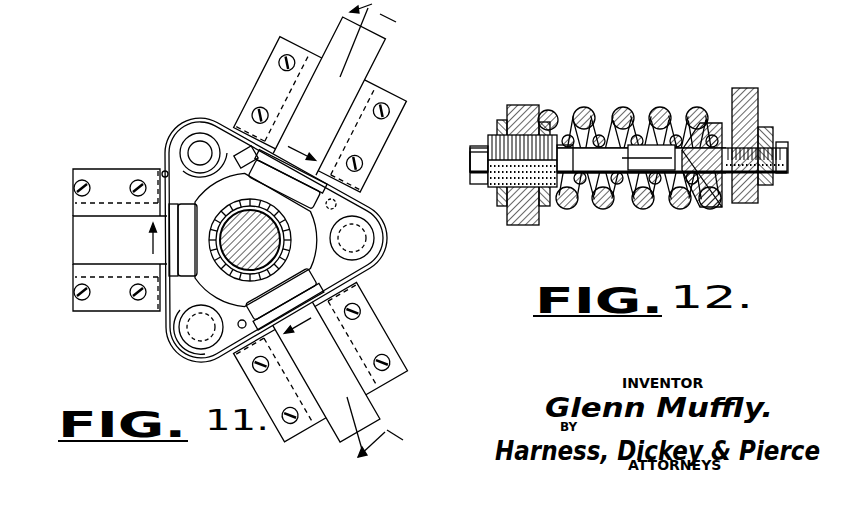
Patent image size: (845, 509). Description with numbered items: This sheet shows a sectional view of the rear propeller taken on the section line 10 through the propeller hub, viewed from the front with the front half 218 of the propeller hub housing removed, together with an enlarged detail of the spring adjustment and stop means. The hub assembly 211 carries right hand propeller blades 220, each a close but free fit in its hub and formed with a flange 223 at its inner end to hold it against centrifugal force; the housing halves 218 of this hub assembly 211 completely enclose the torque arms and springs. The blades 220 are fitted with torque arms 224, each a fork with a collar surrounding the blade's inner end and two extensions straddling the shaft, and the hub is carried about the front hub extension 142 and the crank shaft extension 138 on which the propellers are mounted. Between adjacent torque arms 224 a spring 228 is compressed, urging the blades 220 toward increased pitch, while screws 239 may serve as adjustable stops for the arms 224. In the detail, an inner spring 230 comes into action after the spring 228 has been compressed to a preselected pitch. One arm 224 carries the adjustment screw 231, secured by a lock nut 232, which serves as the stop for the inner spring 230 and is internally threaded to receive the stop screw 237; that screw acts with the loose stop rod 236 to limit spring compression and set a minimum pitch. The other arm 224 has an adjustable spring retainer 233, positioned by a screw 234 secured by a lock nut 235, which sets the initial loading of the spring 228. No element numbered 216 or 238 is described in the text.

In FIG. 11, the section line 10— 10 is at (346, 6).
In FIG. 11, the crank shaft extension 138 is at (246, 267).
In FIG. 11, the front hub extension 142 is at (246, 199).
In FIG. 11, the hub assembly 211 is at (188, 360).
In FIG. 11, the housing 216 is at (215, 170).
In FIG. 11, the propeller hub housing half 218 is at (101, 203).
In FIG. 11, the right hand propeller blade 220 is at (82, 239).
In FIG. 11, the flange 223 is at (289, 238).
In FIG. 11, the torque arm 224 is at (176, 238).
In FIG. 12, the torque arm 224 is at (510, 107).
In FIG. 12, the spring 228 is at (598, 204).
In FIG. 12, the inner spring 230 is at (631, 172).
In FIG. 12, the adjustment screw 231 is at (500, 190).
In FIG. 12, the lock nut 232 is at (500, 125).
In FIG. 12, the adjustable spring retainer 233 is at (720, 115).
In FIG. 12, the screw 234 is at (770, 182).
In FIG. 12, the lock nut 235 is at (766, 176).
In FIG. 12, the loose stop rod 236 is at (640, 152).
In FIG. 12, the stop screw 237 is at (563, 147).
In FIG. 12, the knurled sleeve 238 is at (487, 147).
In FIG. 11, the screw 239 is at (165, 171).